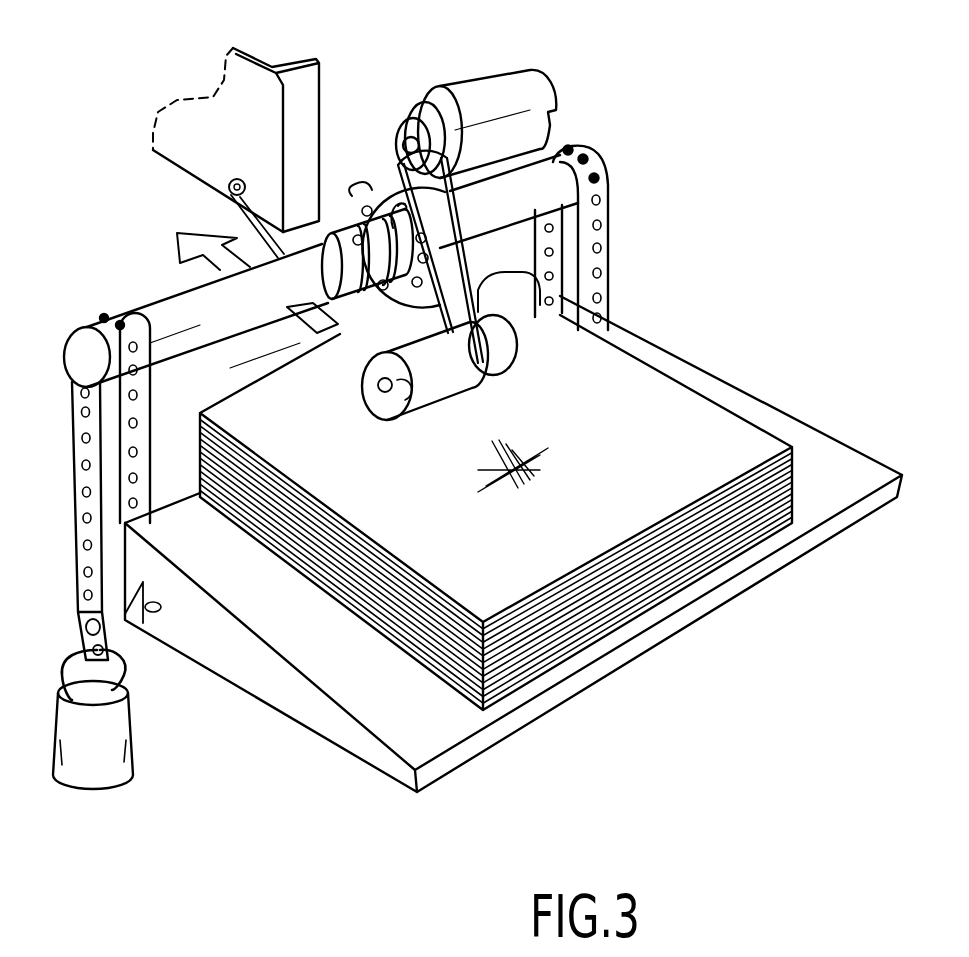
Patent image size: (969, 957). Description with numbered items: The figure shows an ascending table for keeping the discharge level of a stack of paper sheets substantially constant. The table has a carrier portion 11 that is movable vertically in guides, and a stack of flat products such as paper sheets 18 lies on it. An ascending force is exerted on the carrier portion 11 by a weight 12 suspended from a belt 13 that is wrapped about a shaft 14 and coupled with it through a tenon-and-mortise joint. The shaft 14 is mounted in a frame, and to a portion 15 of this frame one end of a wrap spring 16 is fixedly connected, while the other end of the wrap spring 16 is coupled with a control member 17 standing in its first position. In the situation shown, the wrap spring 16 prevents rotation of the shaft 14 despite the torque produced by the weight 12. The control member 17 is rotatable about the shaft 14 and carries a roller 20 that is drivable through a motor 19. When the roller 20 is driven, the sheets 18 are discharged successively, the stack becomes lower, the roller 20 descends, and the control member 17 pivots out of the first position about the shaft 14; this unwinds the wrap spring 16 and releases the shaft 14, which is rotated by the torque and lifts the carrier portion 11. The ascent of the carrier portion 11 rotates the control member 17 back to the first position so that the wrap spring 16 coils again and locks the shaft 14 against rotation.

The carrier portion 11 is at (513, 544).
The weight 12 is at (112, 750).
The belt 13 is at (75, 525).
The shaft 14 is at (162, 313).
The portion 15 is at (257, 77).
The wrap spring 16 is at (333, 233).
The control member 17 is at (503, 307).
The paper sheets 18 is at (496, 512).
The motor 19 is at (500, 95).
The roller 20 is at (430, 390).